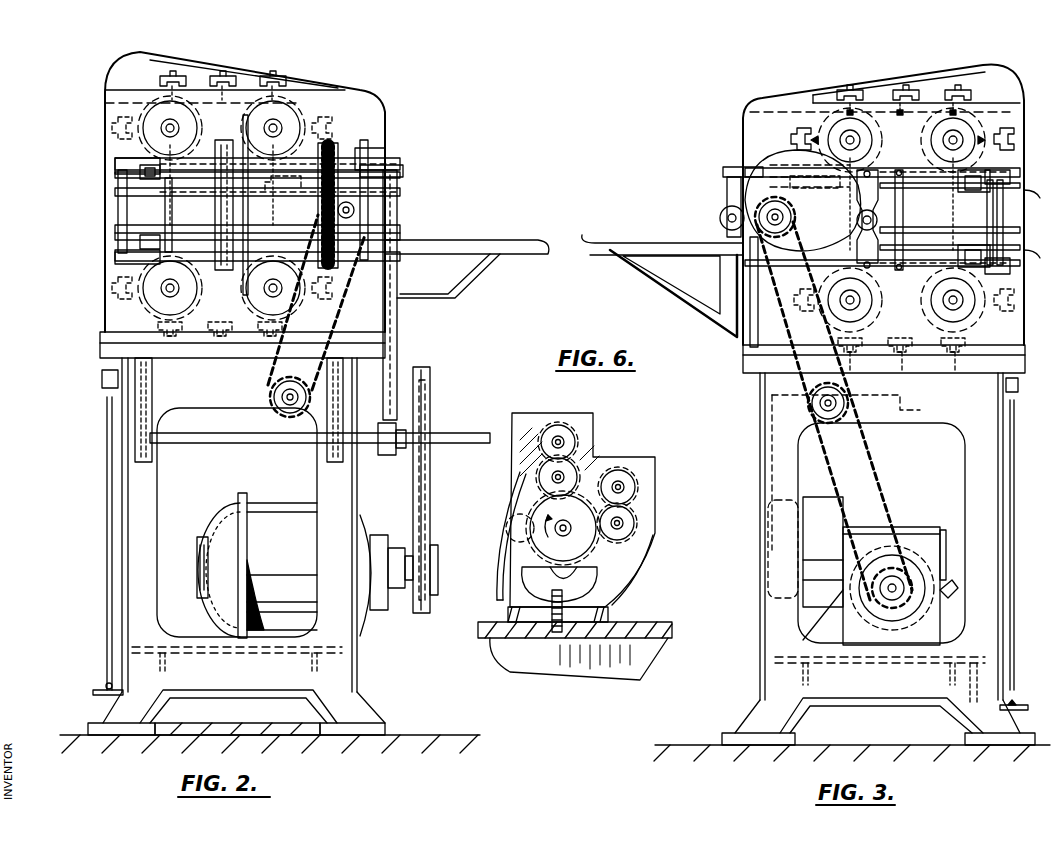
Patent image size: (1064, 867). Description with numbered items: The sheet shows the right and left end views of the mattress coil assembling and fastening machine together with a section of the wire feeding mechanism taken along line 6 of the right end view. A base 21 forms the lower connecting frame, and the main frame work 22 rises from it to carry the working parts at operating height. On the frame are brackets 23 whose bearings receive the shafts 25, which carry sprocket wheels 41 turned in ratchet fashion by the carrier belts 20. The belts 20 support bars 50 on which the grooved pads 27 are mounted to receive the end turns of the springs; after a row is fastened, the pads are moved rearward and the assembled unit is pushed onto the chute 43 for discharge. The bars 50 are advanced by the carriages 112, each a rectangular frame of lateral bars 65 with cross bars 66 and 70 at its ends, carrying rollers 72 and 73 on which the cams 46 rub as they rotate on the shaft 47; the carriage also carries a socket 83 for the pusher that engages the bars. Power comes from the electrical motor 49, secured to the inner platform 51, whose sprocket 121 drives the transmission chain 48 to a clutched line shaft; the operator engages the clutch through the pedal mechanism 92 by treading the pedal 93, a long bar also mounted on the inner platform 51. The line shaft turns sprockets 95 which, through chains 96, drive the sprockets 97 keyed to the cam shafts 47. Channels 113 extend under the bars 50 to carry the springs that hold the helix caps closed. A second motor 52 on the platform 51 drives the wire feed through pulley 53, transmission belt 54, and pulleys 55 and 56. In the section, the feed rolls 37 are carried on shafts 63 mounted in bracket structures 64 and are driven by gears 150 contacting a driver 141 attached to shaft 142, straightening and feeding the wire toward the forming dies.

In FIG. 2, the section line 6— 6 is at (308, 378).
In FIG. 2, the carrier belts 20 is at (105, 104).
In FIG. 3, the carrier belts 20 is at (880, 124).
In FIG. 2, the base 21 is at (378, 722).
In FIG. 3, the base 21 is at (730, 733).
In FIG. 2, the main frame work 22 is at (100, 355).
In FIG. 6, the main frame work 22 is at (660, 624).
In FIG. 3, the main frame work 22 is at (743, 368).
In FIG. 2, the brackets 23 is at (385, 108).
In FIG. 3, the brackets 23 is at (743, 115).
In FIG. 3, the shafts 25 is at (840, 118).
In FIG. 2, the pads 27 is at (160, 80).
In FIG. 3, the pads 27 is at (880, 88).
In FIG. 2, the rolls 37 is at (215, 203).
In FIG. 2, the sprocket wheels 41 is at (197, 128).
In FIG. 3, the sprocket wheels 41 is at (877, 150).
In FIG. 2, the chute 43 is at (485, 240).
In FIG. 3, the chute 43 is at (638, 242).
In FIG. 2, the cams 46 is at (338, 146).
In FIG. 3, the cams 46 is at (767, 152).
In FIG. 3, the shaft 47 is at (795, 216).
In FIG. 3, the transmission chain 48 is at (885, 492).
In FIG. 3, the electrical motor 49 is at (912, 527).
In FIG. 2, the bars 50 is at (118, 62).
In FIG. 3, the bars 50 is at (930, 82).
In FIG. 2, the inner platform 51 is at (232, 656).
In FIG. 3, the inner platform 51 is at (846, 665).
In FIG. 2, the motor 52 is at (225, 506).
In FIG. 2, the pulley 53 is at (430, 604).
In FIG. 2, the transmission belt 54 is at (430, 521).
In FIG. 2, the pulley 55 is at (430, 475).
In FIG. 2, the pulley 56 is at (397, 185).
In FIG. 6, the pulley 56 is at (507, 548).
In FIG. 6, the shafts 63 is at (556, 442).
In FIG. 2, the bracket structures 64 is at (385, 153).
In FIG. 6, the bracket structures 64 is at (600, 430).
In FIG. 2, the lateral bars 65 is at (115, 162).
In FIG. 3, the lateral bars 65 is at (752, 270).
In FIG. 2, the cross bar 66 is at (118, 202).
In FIG. 3, the cross bar 70 is at (727, 193).
In FIG. 3, the roller 72 is at (878, 220).
In FIG. 3, the roller 73 is at (722, 226).
In FIG. 3, the socket 83 is at (1010, 175).
In FIG. 2, the pedal mechanism 92 is at (104, 456).
In FIG. 3, the pedal mechanism 92 is at (1016, 500).
In FIG. 2, the pedal 93 is at (93, 690).
In FIG. 3, the pedal 93 is at (1016, 702).
In FIG. 2, the sprockets 95 is at (270, 385).
In FIG. 3, the sprockets 95 is at (812, 418).
In FIG. 2, the chains 96 is at (270, 397).
In FIG. 3, the chains 96 is at (806, 390).
In FIG. 3, the sprockets 97 is at (730, 258).
In FIG. 2, the carriages 112 is at (410, 170).
In FIG. 3, the carriages 112 is at (720, 170).
In FIG. 3, the channels 113 is at (1000, 232).
In FIG. 3, the sprocket 121 is at (902, 600).
In FIG. 6, the driver 141 is at (570, 545).
In FIG. 6, the shaft 142 is at (590, 540).
In FIG. 6, the gears 150 is at (570, 428).